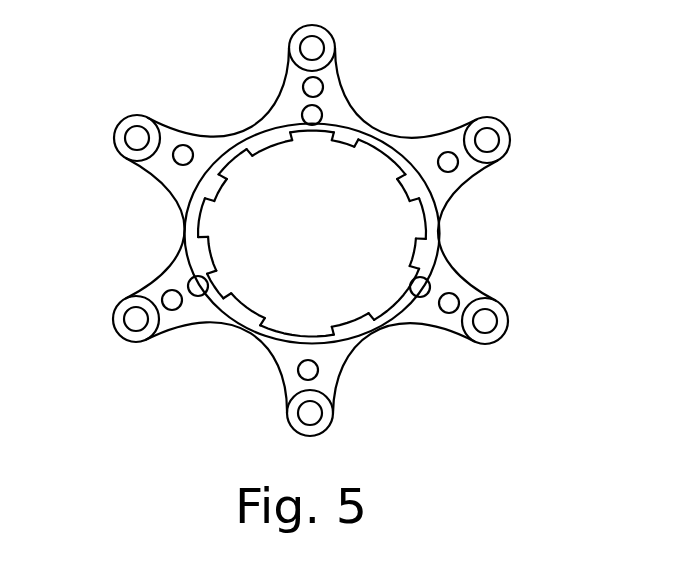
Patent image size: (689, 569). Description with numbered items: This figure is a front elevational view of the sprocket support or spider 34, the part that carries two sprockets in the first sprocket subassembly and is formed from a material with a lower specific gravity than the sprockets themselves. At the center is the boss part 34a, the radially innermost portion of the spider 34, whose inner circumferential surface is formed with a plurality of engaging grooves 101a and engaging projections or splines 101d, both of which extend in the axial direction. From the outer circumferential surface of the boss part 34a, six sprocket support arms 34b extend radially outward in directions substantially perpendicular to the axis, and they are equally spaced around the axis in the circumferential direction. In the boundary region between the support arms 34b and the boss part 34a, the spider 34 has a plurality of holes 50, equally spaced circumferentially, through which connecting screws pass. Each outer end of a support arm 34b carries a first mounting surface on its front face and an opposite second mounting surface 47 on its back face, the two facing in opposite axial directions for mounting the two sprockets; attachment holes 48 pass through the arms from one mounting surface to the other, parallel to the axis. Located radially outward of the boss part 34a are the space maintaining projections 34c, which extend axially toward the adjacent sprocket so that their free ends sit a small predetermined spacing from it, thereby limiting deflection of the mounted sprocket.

The spider 34 is at (340, 214).
The boss part 34a is at (392, 148).
The sprocket support arms 34b is at (333, 108).
The space maintaining projections 34c is at (183, 145).
The second mounting surface 47 is at (491, 140).
The attachment holes 48 is at (503, 160).
The holes 50 is at (303, 113).
The engaging grooves 101a is at (218, 176).
The engaging projections or splines 101d is at (250, 143).